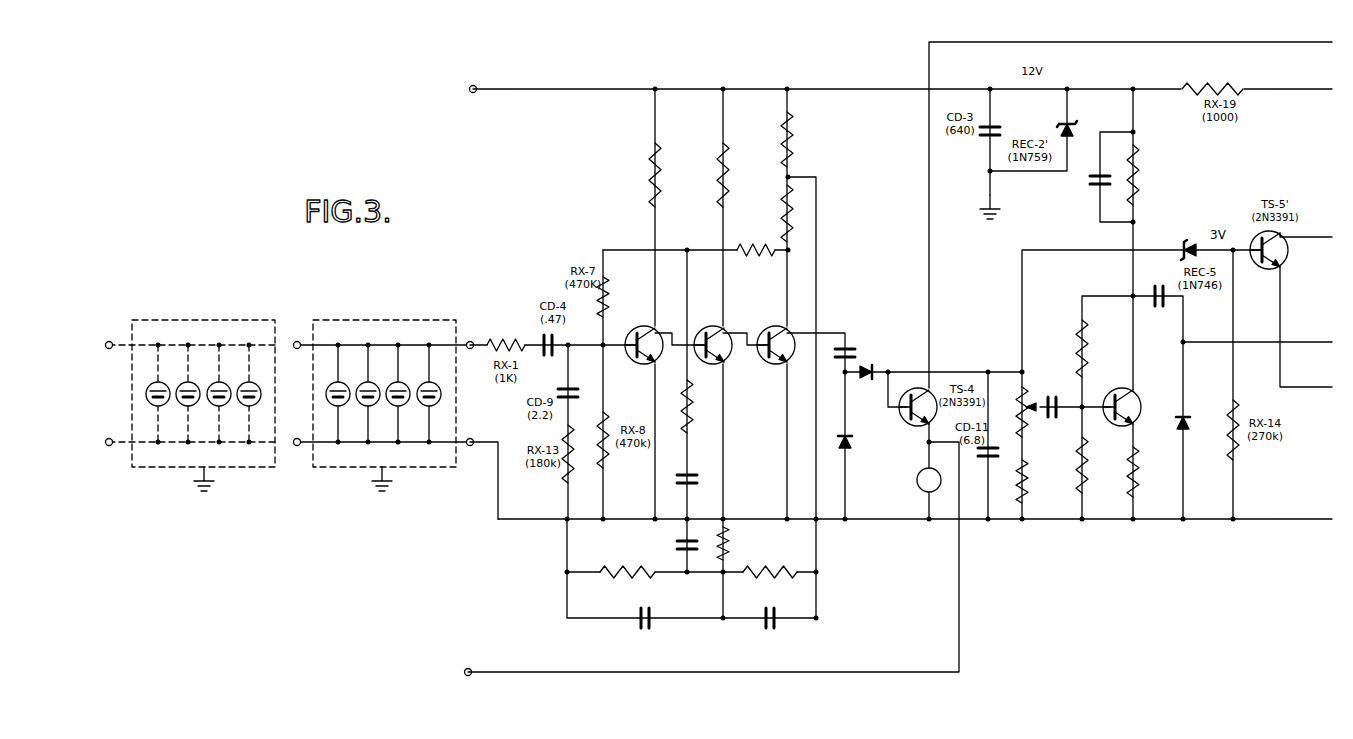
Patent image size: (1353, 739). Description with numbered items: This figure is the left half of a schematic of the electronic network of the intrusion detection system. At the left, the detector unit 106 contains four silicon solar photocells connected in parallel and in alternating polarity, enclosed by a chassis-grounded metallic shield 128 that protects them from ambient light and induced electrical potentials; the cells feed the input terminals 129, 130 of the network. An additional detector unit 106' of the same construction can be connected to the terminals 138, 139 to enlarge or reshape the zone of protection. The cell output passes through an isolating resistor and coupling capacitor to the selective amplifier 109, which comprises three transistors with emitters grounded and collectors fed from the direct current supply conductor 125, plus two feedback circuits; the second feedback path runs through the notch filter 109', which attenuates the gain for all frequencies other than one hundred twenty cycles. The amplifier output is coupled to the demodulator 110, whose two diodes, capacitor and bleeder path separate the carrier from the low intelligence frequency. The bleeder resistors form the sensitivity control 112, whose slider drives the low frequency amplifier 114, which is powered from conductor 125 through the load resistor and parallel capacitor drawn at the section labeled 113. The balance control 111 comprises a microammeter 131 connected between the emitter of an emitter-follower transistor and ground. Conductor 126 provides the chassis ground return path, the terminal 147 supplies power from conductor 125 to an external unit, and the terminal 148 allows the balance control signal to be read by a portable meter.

The detector unit 106 is at (383, 374).
The additional detector unit 106' is at (192, 374).
The metallic shield 128 is at (247, 320).
The terminal 138 is at (109, 341).
The terminal 139 is at (109, 446).
The input terminal 129 is at (472, 341).
The input terminal 130 is at (470, 446).
The terminal 147 is at (473, 85).
The conductor 125 is at (862, 89).
The conductor 126 is at (890, 519).
The terminal 148 is at (472, 668).
The selective amplifier 109 is at (724, 353).
The notch filter 109' is at (692, 590).
The demodulator 110 is at (893, 345).
The balance control 111 is at (873, 426).
The sensitivity control 112 is at (1040, 352).
The voltage regulator 113 is at (1158, 220).
The low frequency amplifier 114 is at (1150, 362).
The microammeter 131 is at (917, 480).